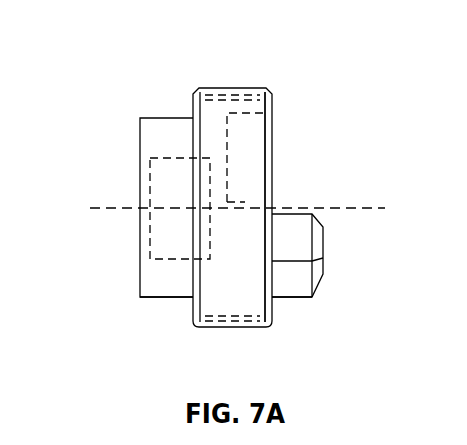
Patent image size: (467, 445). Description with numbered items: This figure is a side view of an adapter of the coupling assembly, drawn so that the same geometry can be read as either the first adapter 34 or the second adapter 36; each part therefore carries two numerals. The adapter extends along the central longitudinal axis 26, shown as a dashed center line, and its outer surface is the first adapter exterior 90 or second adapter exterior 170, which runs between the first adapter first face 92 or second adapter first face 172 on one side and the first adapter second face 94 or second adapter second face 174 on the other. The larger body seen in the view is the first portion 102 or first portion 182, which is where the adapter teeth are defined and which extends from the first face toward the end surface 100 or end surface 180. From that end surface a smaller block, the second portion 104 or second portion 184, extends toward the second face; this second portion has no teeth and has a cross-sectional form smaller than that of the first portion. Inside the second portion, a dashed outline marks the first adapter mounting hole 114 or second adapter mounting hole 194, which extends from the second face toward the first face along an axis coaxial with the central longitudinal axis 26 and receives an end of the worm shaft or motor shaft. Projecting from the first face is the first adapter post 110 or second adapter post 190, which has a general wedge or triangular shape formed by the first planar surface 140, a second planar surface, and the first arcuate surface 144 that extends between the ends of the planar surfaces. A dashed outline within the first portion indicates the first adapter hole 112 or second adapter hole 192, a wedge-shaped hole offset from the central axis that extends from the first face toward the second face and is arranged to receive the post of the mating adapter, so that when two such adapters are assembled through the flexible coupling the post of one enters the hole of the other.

The central longitudinal axis 26 is at (358, 205).
The first adapter 34 is at (329, 43).
The second adapter 36 is at (279, 57).
The first adapter exterior 90 is at (246, 56).
The second adapter exterior 170 is at (223, 87).
The first adapter first face 92 is at (328, 200).
The second adapter first face 172 is at (272, 108).
The first adapter second face 94 is at (106, 207).
The second adapter second face 174 is at (142, 143).
The end surface 100 is at (187, 176).
The end surface 180 is at (193, 117).
The first portion 102 is at (246, 349).
The first portion 182 is at (225, 313).
The second portion 104 is at (149, 326).
The second portion 184 is at (172, 287).
The first adapter post 110 is at (357, 274).
The second adapter post 190 is at (316, 298).
The first adapter hole 112 is at (318, 157).
The second adapter hole 192 is at (250, 117).
The first adapter mounting hole 114 is at (113, 237).
The second adapter mounting hole 194 is at (169, 262).
The first planar surface 140 is at (303, 247).
The first arcuate surface 144 is at (292, 297).